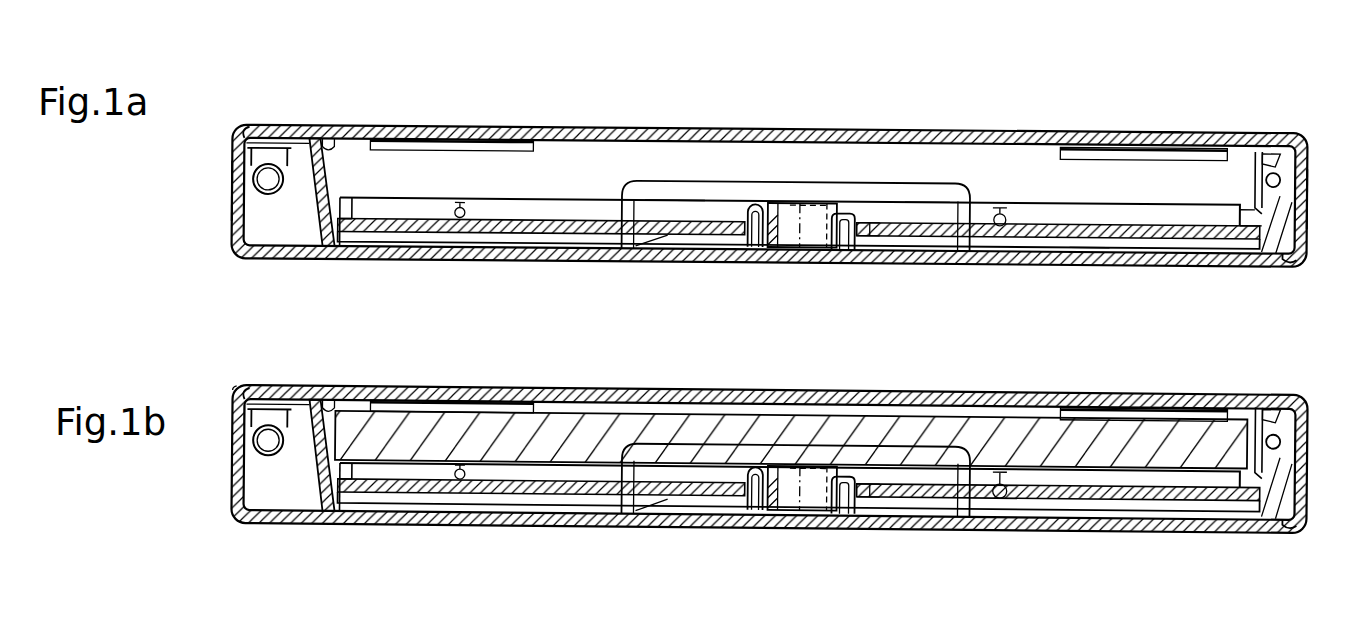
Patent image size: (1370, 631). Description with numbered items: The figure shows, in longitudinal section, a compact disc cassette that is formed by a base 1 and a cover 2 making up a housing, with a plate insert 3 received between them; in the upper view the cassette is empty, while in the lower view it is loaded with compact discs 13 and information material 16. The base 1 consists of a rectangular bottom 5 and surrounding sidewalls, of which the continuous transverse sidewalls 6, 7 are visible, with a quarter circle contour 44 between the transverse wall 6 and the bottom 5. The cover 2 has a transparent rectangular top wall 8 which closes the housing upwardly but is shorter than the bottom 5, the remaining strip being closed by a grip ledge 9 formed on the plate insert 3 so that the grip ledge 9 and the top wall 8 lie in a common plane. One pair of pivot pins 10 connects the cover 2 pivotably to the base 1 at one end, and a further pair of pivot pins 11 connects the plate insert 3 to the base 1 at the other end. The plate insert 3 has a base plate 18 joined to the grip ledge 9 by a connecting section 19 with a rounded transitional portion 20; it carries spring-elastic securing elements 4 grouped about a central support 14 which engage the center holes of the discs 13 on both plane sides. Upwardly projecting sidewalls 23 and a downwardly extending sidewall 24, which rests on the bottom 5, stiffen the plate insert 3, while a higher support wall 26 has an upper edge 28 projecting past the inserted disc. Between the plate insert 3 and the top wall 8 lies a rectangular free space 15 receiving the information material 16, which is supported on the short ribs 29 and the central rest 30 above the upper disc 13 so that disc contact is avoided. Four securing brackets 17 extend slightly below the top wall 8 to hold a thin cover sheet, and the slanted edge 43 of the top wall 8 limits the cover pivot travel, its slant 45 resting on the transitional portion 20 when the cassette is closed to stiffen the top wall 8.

In FIG. 1A, the base 1 is at (288, 263).
In FIG. 1A, the cover 2 is at (1153, 130).
In FIG. 1A, the plate insert 3 is at (679, 210).
In FIG. 1A, the securing elements 4 is at (750, 205).
In FIG. 1A, the bottom 5 is at (517, 250).
In FIG. 1A, the transverse sidewall 6 is at (230, 196).
In FIG. 1A, the transverse sidewall 7 is at (1308, 191).
In FIG. 1A, the top wall 8 is at (1228, 142).
In FIG. 1B, the grip ledge 9 is at (250, 387).
In FIG. 1A, the pivot pins 10 is at (274, 160).
In FIG. 1A, the pivot pins 11 is at (1281, 158).
In FIG. 1B, the compact discs 13 is at (395, 520).
In FIG. 1A, the central support 14 is at (846, 262).
In FIG. 1B, the central support 14 is at (846, 530).
In FIG. 1A, the free space 15 is at (1017, 152).
In FIG. 1B, the information material 16 is at (1006, 445).
In FIG. 1A, the securing brackets 17 is at (494, 147).
In FIG. 1B, the securing brackets 17 is at (488, 410).
In FIG. 1A, the base plate 18 is at (418, 228).
In FIG. 1B, the base plate 18 is at (1162, 540).
In FIG. 1B, the connecting section 19 is at (312, 398).
In FIG. 1B, the transitional portion 20 is at (298, 395).
In FIG. 1A, the upwardly projecting sidewalls 23 is at (1149, 212).
In FIG. 1A, the downwardly extending sidewall 24 is at (1089, 238).
In FIG. 1A, the support wall 26 is at (928, 208).
In FIG. 1A, the upper edge 28 is at (878, 183).
In FIG. 1B, the upper edge 28 is at (868, 447).
In FIG. 1A, the short ribs 29 is at (346, 212).
In FIG. 1B, the short ribs 29 is at (337, 525).
In FIG. 1B, the central rest 30 is at (776, 463).
In FIG. 1B, the transversely extending edge 43 is at (325, 400).
In FIG. 1A, the quarter circle contour 44 is at (241, 128).
In FIG. 1B, the slant 45 is at (315, 392).